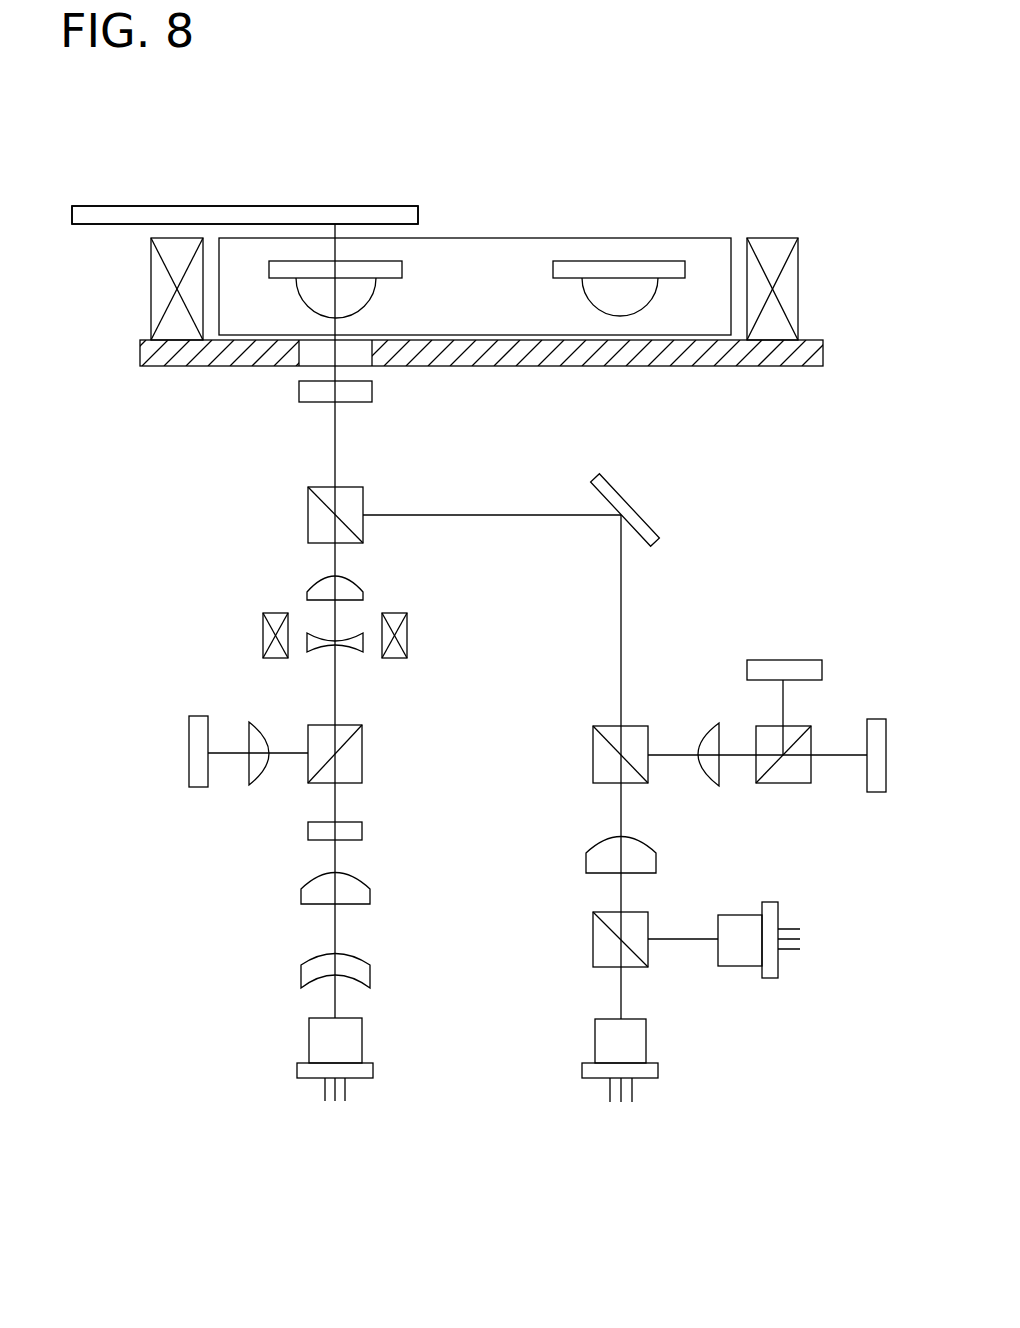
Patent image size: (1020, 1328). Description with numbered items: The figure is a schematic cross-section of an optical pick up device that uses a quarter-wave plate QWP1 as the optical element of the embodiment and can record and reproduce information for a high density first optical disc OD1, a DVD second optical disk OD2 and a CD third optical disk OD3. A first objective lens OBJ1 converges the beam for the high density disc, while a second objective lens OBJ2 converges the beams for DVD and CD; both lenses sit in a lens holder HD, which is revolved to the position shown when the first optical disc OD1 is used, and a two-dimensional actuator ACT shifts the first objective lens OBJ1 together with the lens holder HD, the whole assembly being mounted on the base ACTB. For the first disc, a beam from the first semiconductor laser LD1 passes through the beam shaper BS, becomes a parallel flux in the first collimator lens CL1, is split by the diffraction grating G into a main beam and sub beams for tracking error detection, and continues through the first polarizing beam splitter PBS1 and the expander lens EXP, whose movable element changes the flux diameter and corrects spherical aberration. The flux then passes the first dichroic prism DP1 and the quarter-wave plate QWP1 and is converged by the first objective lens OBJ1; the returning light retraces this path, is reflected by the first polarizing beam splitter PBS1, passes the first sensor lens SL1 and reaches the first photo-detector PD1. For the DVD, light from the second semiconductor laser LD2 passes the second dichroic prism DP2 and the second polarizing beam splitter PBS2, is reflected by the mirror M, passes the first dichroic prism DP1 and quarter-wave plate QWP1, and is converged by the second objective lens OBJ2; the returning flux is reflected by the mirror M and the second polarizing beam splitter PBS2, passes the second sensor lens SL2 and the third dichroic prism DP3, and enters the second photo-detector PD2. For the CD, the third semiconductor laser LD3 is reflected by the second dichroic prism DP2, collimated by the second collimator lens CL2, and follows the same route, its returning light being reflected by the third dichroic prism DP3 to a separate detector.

The first optical disc OD1 is at (270, 181).
The second optical disk OD2 is at (270, 181).
The third optical disk OD3 is at (270, 181).
The first objective lens OBJ1 is at (403, 270).
The second objective lens OBJ2 is at (673, 260).
The two-dimensional actuator ACT is at (148, 284).
The lens holder HD is at (620, 345).
The actuator base ACTB is at (765, 360).
The quarter-wave plate QWP1 is at (372, 391).
The first dichroic prism DP1 is at (308, 514).
The mirror M is at (632, 508).
The expander lens EXP is at (250, 575).
The first polarizing beam splitter PBS1 is at (362, 753).
The first photo-detector PD1 is at (203, 788).
The first sensor lens SL1 is at (257, 786).
The diffraction grating G is at (362, 831).
The first collimator lens CL1 is at (370, 893).
The beam shaper BS is at (370, 975).
The first semiconductor laser LD1 is at (362, 1040).
The second polarizing beam splitter PBS2 is at (593, 755).
The second sensor lens SL2 is at (700, 722).
The third dichroic prism DP3 is at (783, 786).
The second photo-detector PD2 is at (803, 658).
The second collimator lens CL2 is at (586, 862).
The second dichroic prism DP2 is at (593, 939).
The third semiconductor laser LD3 is at (765, 980).
The second semiconductor laser LD2 is at (646, 1043).